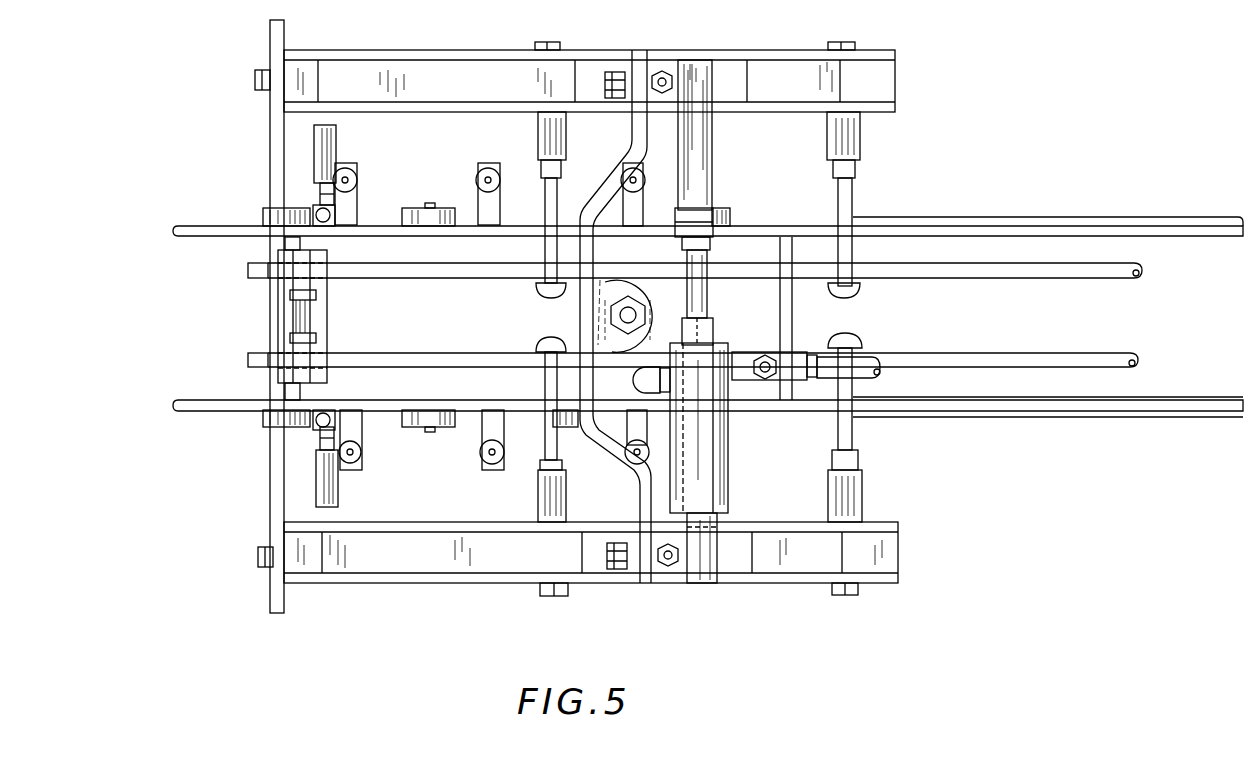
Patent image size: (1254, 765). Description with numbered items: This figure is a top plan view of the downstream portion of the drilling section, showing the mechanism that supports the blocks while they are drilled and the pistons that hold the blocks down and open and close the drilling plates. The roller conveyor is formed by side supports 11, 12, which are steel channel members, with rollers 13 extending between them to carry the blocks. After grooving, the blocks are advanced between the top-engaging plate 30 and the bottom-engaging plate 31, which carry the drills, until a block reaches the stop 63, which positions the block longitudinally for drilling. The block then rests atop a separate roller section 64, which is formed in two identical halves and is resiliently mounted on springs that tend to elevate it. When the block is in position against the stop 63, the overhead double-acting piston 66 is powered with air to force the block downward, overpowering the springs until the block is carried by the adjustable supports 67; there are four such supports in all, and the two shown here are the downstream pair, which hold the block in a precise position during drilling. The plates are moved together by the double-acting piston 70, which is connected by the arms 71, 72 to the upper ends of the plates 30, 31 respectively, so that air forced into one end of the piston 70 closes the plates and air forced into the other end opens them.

The side support 11 is at (219, 238).
The side support 12 is at (200, 400).
The rollers 13 is at (438, 208).
The top-engaging plate 30 is at (437, 72).
The bottom-engaging plate 31 is at (407, 555).
The stop 63 is at (320, 315).
The roller section 64 is at (378, 224).
The overhead double-acting piston 66 is at (632, 300).
The adjustable supports 67 is at (322, 212).
The double-acting piston 70 is at (720, 452).
The arm 71 is at (703, 173).
The arm 72 is at (717, 543).